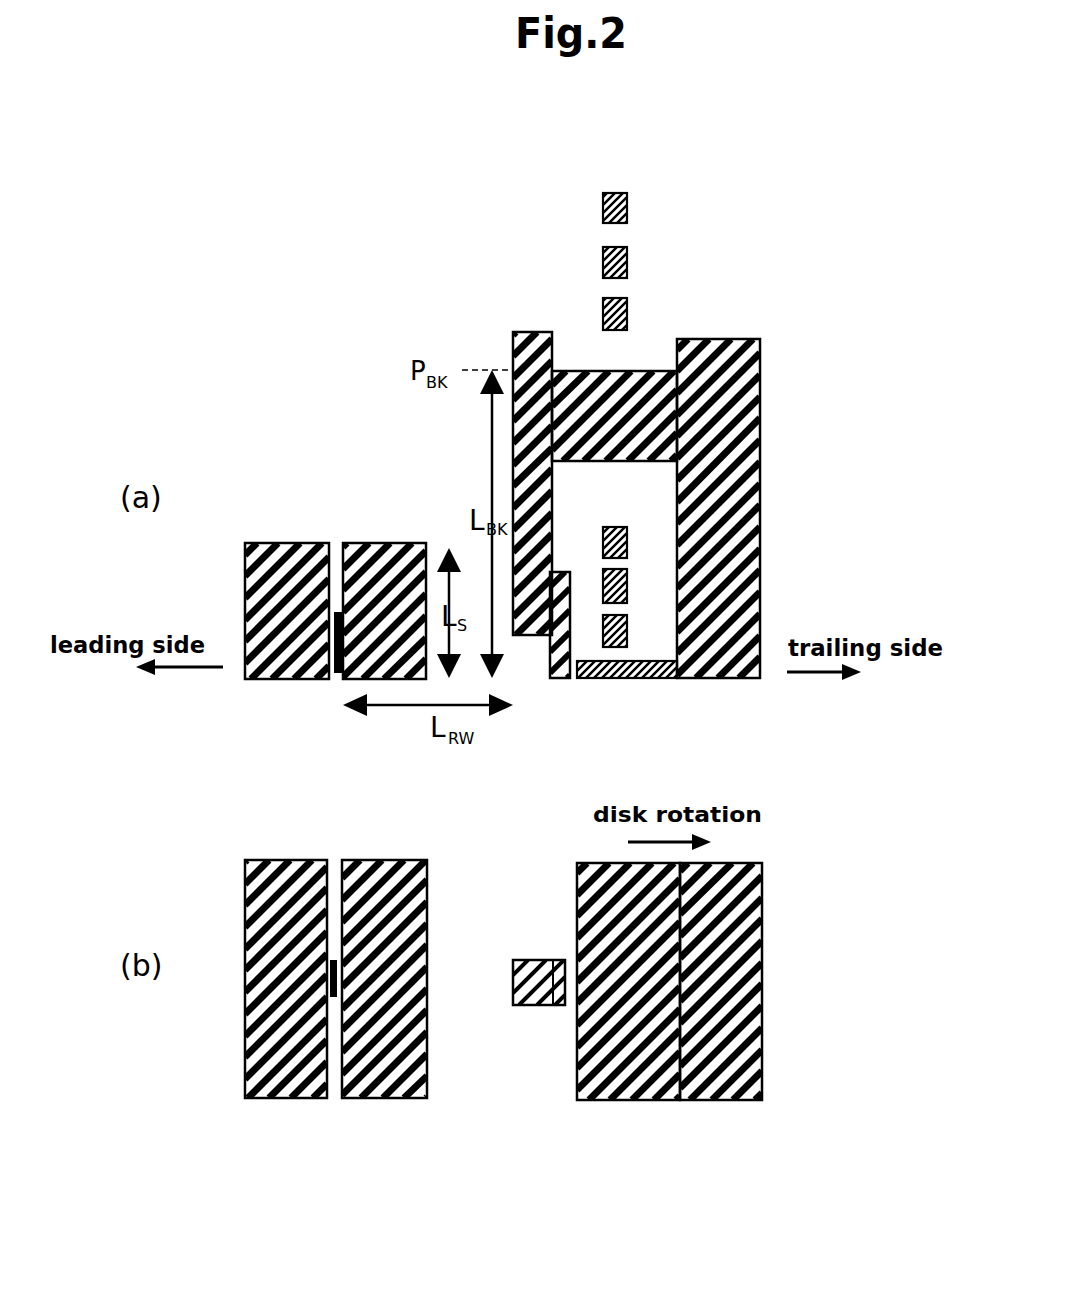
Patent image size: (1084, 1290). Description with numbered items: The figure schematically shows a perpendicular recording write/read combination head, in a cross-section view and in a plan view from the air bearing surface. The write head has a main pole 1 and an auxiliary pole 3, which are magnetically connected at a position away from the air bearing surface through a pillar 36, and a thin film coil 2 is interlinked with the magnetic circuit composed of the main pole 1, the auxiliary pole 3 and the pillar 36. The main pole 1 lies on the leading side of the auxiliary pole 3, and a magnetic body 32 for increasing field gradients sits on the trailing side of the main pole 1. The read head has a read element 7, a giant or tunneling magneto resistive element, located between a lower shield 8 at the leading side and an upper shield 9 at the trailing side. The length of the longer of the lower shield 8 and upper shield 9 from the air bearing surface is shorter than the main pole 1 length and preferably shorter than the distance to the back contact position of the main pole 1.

The main pole 1 is at (528, 332).
The thin film coil 2 is at (623, 270).
The auxiliary pole 3 is at (760, 590).
The read element 7 is at (329, 678).
The lower shield 8 is at (290, 553).
The upper shield 9 is at (387, 543).
The magnetic body 32 is at (635, 658).
The pillar 36 is at (636, 371).